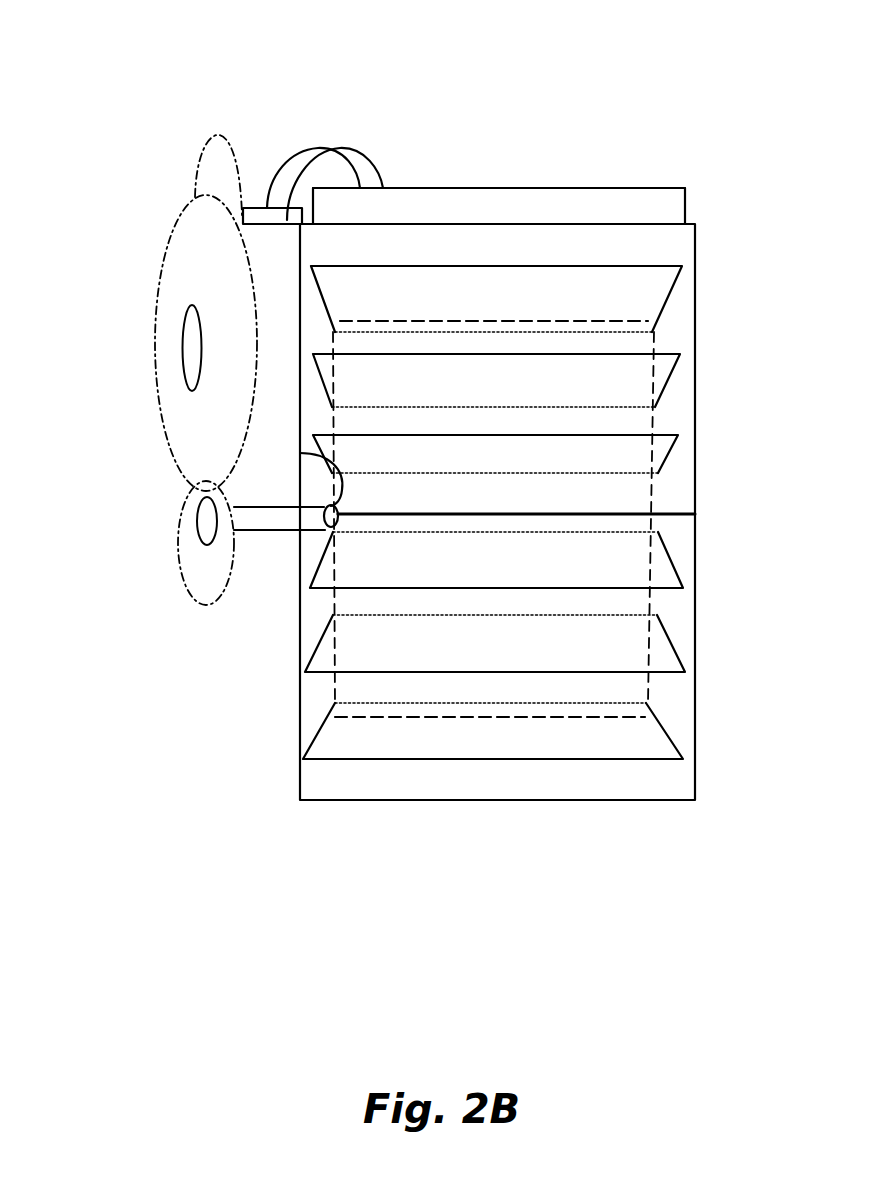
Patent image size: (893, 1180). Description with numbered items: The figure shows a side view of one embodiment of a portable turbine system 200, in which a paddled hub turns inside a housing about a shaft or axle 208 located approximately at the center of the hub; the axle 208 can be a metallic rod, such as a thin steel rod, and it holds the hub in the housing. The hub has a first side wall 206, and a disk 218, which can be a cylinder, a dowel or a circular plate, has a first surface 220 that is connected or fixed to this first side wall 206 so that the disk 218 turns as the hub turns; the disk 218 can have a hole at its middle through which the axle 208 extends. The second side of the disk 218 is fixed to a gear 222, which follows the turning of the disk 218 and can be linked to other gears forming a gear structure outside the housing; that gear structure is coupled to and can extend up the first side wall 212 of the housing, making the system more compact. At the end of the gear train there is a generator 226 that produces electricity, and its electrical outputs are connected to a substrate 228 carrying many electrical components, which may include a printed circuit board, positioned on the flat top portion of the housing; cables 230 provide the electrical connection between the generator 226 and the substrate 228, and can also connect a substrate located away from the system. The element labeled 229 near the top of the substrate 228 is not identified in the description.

The portable turbine system 200 is at (577, 63).
The first side wall 206 is at (330, 596).
The axle 208 is at (672, 513).
The first side wall 212 is at (298, 705).
The disk 218 is at (273, 533).
The first surface 220 is at (300, 453).
The gear 222 is at (178, 537).
The generator 226 is at (252, 208).
The substrate 228 is at (493, 205).
The top surface 229 is at (587, 188).
The cables 230 is at (291, 150).